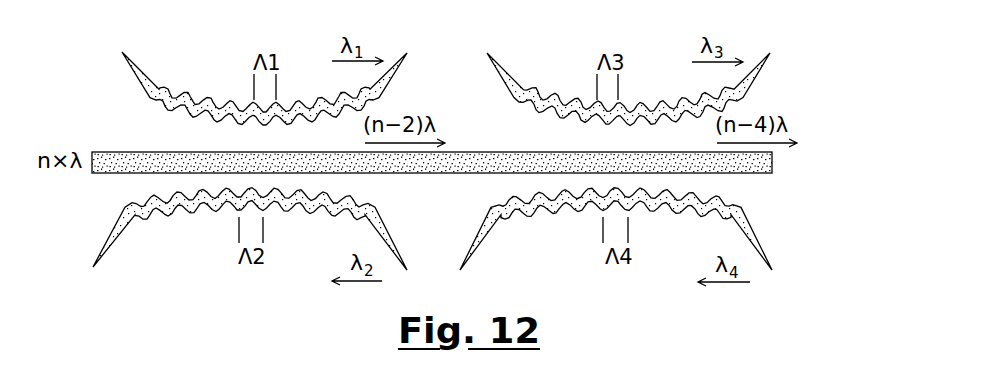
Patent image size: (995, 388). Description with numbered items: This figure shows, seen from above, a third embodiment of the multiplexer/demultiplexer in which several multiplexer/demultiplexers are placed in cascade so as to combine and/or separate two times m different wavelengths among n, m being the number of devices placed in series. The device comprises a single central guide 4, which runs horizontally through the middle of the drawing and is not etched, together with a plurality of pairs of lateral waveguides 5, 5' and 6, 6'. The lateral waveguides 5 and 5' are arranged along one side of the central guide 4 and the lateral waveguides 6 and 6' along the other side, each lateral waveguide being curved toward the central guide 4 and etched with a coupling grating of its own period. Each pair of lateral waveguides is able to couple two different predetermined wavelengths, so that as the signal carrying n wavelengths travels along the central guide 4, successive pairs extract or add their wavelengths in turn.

The central waveguide 4 is at (757, 172).
The lateral waveguide 5 is at (264, 69).
The lateral waveguide 5' is at (654, 89).
The lateral waveguide 6 is at (250, 246).
The lateral waveguide 6' is at (644, 229).